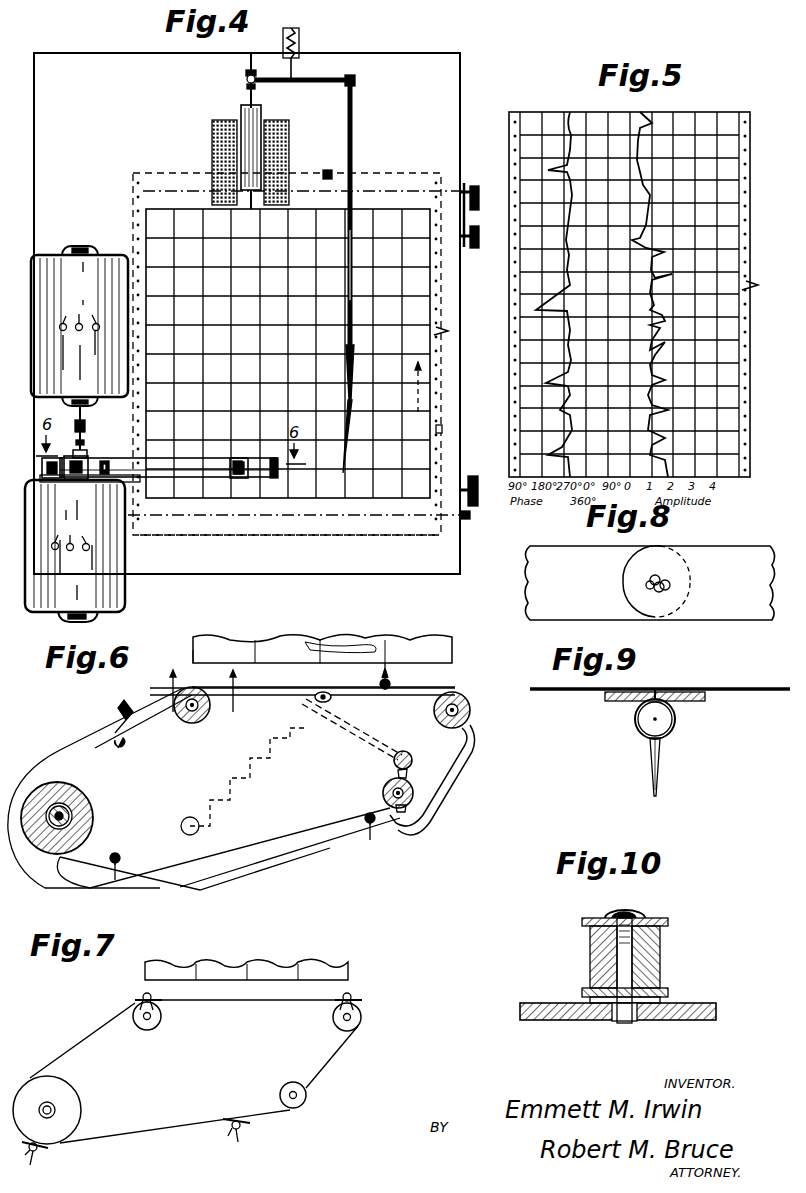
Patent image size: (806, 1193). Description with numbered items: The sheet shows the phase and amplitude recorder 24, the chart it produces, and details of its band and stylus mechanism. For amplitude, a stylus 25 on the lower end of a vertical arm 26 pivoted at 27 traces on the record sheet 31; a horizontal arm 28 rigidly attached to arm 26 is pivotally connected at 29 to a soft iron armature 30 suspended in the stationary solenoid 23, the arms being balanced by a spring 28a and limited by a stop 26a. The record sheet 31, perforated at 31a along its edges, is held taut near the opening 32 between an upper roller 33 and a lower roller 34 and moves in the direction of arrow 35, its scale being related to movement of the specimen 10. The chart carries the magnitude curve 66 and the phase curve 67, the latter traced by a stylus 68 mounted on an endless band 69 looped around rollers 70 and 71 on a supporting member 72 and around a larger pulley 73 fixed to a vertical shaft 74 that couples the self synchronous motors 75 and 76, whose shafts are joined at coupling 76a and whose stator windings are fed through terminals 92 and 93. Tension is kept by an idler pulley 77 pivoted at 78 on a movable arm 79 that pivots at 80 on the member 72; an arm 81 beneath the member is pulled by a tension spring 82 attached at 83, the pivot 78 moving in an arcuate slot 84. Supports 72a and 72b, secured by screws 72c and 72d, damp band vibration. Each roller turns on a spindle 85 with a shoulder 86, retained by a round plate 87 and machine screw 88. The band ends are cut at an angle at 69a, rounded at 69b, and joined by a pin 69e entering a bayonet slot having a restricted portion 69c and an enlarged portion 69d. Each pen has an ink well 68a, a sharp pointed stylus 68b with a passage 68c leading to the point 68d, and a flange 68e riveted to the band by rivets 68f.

In FIG. 6, the specimen 10 is at (165, 694).
In FIG. 4, the stationary solenoid 23 is at (210, 135).
In FIG. 4, the recorder 24 is at (460, 302).
In FIG. 4, the stylus 25 is at (348, 470).
In FIG. 4, the arm 26 is at (354, 147).
In FIG. 4, the stop 26a is at (326, 170).
In FIG. 4, the pivot 27 is at (356, 80).
In FIG. 4, the horizontal arm 28 is at (336, 84).
In FIG. 4, the spring 28a is at (300, 47).
In FIG. 4, the pivotal connection 29 is at (243, 77).
In FIG. 4, the soft iron armature 30 is at (262, 112).
In FIG. 4, the record sheet 31 is at (412, 460).
In FIG. 5, the record sheet 31 is at (708, 334).
In FIG. 7, the record sheet 31 is at (340, 972).
In FIG. 4, the perforations 31a is at (436, 331).
In FIG. 5, the perforations 31a is at (765, 291).
In FIG. 4, the opening 32 is at (441, 428).
In FIG. 4, the upper roller 33 is at (396, 185).
In FIG. 4, the lower roller 34 is at (345, 540).
In FIG. 4, the arrow 35 is at (422, 391).
In FIG. 5, the curve 66 is at (660, 246).
In FIG. 5, the curve 67 is at (576, 222).
In FIG. 6, the curve 67 is at (358, 636).
In FIG. 4, the stylus 68 is at (104, 478).
In FIG. 9, the stylus 68 is at (677, 722).
In FIG. 6, the stylus 68 is at (392, 680).
In FIG. 7, the stylus 68 is at (354, 994).
In FIG. 9, the ink well 68a is at (645, 722).
In FIG. 6, the ink well 68a is at (118, 728).
In FIG. 7, the ink well 68a is at (154, 996).
In FIG. 9, the sharp pointed stylus 68b is at (660, 768).
In FIG. 6, the sharp pointed stylus 68b is at (124, 860).
In FIG. 7, the sharp pointed stylus 68b is at (42, 1150).
In FIG. 9, the passage 68c is at (650, 760).
In FIG. 6, the passage 68c is at (378, 828).
In FIG. 7, the passage 68c is at (243, 1125).
In FIG. 9, the sharp point 68d is at (658, 794).
In FIG. 9, the flange 68e is at (614, 702).
In FIG. 9, the rivets 68f is at (662, 680).
In FIG. 4, the endless band 69 is at (188, 472).
In FIG. 8, the endless band 69 is at (749, 560).
In FIG. 9, the endless band 69 is at (744, 688).
In FIG. 6, the endless band 69 is at (322, 685).
In FIG. 7, the endless band 69 is at (338, 1058).
In FIG. 8, the angled ends 69a is at (640, 560).
In FIG. 8, the rounded ends 69b is at (672, 592).
In FIG. 8, the restricted portion 69c is at (650, 578).
In FIG. 8, the enlarged portion 69d is at (665, 585).
In FIG. 8, the pin 69e is at (644, 584).
In FIG. 4, the roller 70 is at (120, 462).
In FIG. 10, the roller 70 is at (660, 960).
In FIG. 6, the roller 70 is at (195, 724).
In FIG. 7, the roller 70 is at (158, 1024).
In FIG. 4, the roller 71 is at (262, 458).
In FIG. 6, the roller 71 is at (470, 732).
In FIG. 7, the roller 71 is at (342, 1018).
In FIG. 4, the supporting member 72 is at (218, 483).
In FIG. 10, the supporting member 72 is at (690, 1018).
In FIG. 6, the supporting member 72 is at (455, 773).
In FIG. 6, the support 72a is at (332, 698).
In FIG. 6, the support 72b is at (124, 746).
In FIG. 6, the screw 72c is at (328, 702).
In FIG. 6, the screw 72d is at (117, 752).
In FIG. 4, the pulley 73 is at (80, 478).
In FIG. 6, the pulley 73 is at (94, 796).
In FIG. 7, the pulley 73 is at (84, 1110).
In FIG. 6, the vertical shaft 74 is at (72, 822).
In FIG. 7, the vertical shaft 74 is at (55, 1105).
In FIG. 4, the dynamo-electric machine 75 is at (58, 232).
In FIG. 4, the dynamo-electric machine 76 is at (112, 603).
In FIG. 4, the coupling 76a is at (86, 428).
In FIG. 6, the idler pulley 77 is at (380, 794).
In FIG. 7, the idler pulley 77 is at (278, 1095).
In FIG. 6, the pivotal support 78 is at (406, 808).
In FIG. 6, the movable arm 79 is at (408, 776).
In FIG. 6, the pivot 80 is at (420, 740).
In FIG. 6, the arm 81 is at (362, 738).
In FIG. 6, the tension spring 82 is at (248, 776).
In FIG. 6, the attachment point 83 is at (202, 824).
In FIG. 6, the arcuate slot 84 is at (388, 785).
In FIG. 10, the spindle 85 is at (628, 1025).
In FIG. 10, the shoulder 86 is at (660, 996).
In FIG. 10, the round plate 87 is at (642, 915).
In FIG. 10, the machine screw 88 is at (628, 913).
In FIG. 4, the terminals 92 is at (80, 311).
In FIG. 4, the terminals 93 is at (71, 533).